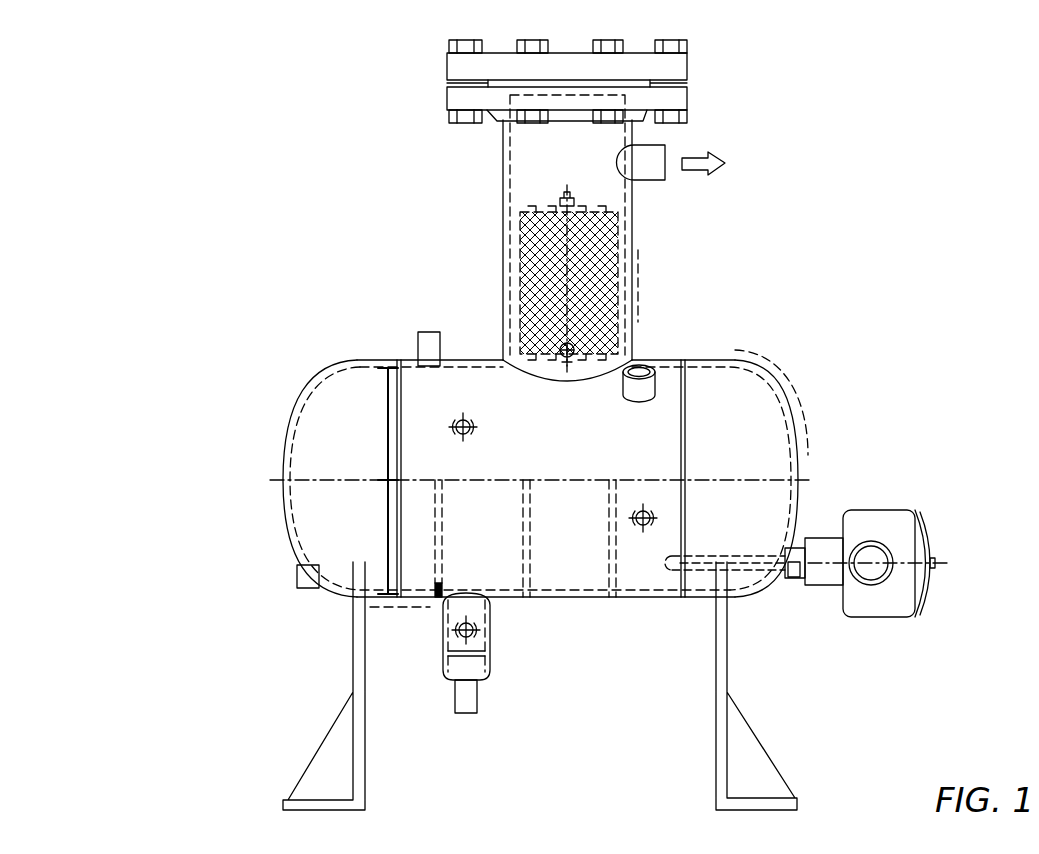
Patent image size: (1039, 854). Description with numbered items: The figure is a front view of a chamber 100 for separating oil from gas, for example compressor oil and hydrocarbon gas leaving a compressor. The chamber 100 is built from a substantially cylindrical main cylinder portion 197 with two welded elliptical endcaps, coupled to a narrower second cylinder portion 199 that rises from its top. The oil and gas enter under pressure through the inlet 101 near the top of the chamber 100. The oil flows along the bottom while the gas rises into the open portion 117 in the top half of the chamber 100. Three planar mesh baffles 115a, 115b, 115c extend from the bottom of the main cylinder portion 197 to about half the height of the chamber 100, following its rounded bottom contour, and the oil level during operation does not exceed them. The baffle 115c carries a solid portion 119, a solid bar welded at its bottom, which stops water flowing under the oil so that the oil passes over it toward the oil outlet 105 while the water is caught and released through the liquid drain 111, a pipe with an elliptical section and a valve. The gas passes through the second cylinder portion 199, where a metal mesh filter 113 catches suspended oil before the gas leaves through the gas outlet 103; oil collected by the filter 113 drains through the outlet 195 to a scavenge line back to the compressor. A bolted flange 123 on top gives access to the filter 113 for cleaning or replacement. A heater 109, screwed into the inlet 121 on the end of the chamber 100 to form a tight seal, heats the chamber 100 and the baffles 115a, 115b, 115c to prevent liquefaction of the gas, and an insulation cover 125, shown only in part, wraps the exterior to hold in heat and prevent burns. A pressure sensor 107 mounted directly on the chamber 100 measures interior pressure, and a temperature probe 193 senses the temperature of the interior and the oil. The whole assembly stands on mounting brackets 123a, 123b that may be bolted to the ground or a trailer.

The chamber 100 is at (133, 140).
The inlet 101 is at (645, 368).
The gas outlet 103 is at (652, 170).
The oil outlet 105 is at (297, 578).
The pressure sensor 107 is at (425, 333).
The heater 109 is at (892, 520).
The liquid drain 111 is at (478, 702).
The filter 113 is at (527, 250).
The baffle 115a is at (612, 597).
The baffle 115b is at (525, 597).
The baffle 115c is at (438, 482).
The open portion 117 is at (726, 410).
The solid portion 119 is at (440, 597).
The inlet 121 is at (795, 578).
The flange 123 is at (455, 65).
The mounting bracket 123a is at (305, 775).
The mounting bracket 123b is at (757, 740).
The insulation cover 125 is at (640, 285).
The temperature probe 193 is at (633, 522).
The outlet 195 is at (565, 347).
The main cylinder portion 197 is at (250, 412).
The second cylinder portion 199 is at (478, 168).